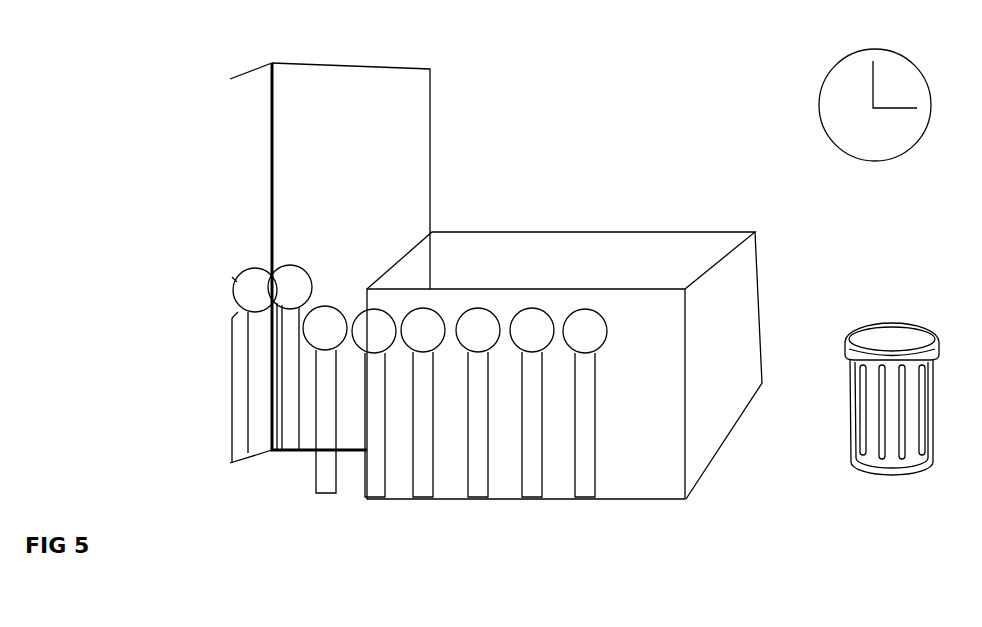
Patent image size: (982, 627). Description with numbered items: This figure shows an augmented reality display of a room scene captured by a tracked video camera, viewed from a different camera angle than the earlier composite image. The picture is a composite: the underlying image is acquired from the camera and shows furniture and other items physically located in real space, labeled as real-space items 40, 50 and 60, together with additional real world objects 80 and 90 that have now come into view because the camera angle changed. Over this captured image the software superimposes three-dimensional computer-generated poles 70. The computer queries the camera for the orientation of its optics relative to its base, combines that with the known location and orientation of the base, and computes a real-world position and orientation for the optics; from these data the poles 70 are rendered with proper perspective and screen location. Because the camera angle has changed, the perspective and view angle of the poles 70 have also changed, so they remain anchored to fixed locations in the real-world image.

The real-space item 40 is at (562, 228).
The real-space item 50 is at (342, 63).
The real-space item 60 is at (252, 65).
The computer-generated poles 70 is at (328, 300).
The real world object 80 is at (845, 53).
The real world object 90 is at (866, 318).